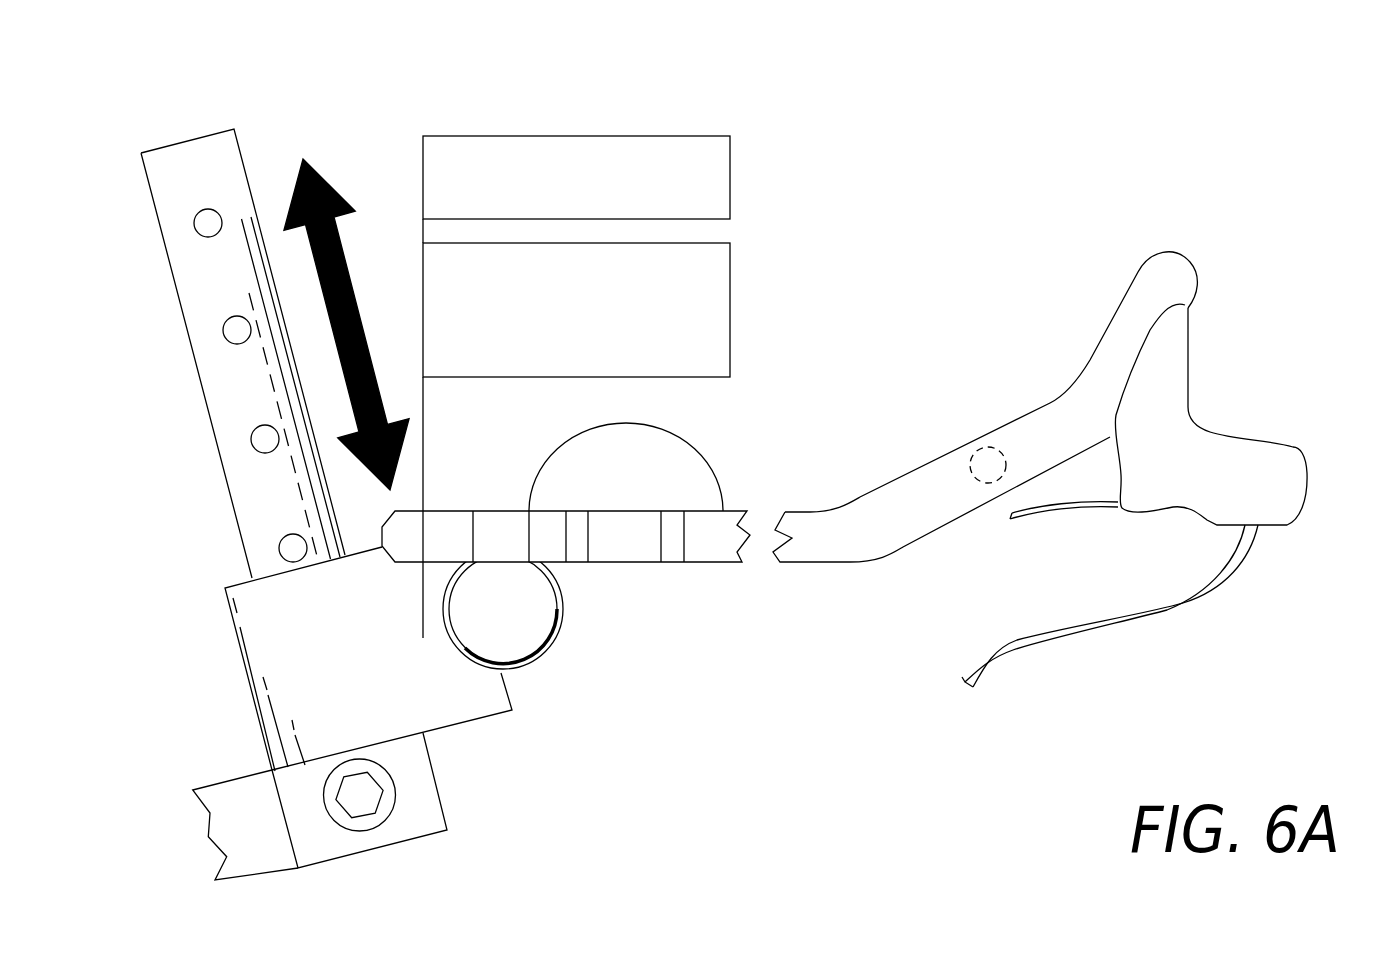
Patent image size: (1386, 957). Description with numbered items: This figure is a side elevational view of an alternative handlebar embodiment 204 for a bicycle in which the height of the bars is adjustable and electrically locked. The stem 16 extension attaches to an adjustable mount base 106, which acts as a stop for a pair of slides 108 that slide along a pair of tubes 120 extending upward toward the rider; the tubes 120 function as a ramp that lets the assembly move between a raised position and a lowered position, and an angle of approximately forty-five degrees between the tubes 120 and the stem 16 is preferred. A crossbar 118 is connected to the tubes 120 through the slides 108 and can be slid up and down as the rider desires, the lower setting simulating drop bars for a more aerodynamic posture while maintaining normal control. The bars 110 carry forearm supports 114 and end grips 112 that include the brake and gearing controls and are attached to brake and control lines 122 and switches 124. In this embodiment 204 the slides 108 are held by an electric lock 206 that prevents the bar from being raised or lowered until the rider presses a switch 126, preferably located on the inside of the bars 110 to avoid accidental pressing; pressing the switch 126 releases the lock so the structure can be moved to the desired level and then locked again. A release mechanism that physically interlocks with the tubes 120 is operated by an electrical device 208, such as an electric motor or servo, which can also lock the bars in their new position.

The stem 16 is at (230, 778).
The adjustable mount base 106 is at (447, 830).
The slides 108 is at (512, 710).
The bars 110 is at (918, 460).
The end grips 112 is at (1188, 380).
The forearm supports 114 is at (698, 452).
The crossbar 118 is at (563, 611).
The tubes 120 is at (215, 128).
The brake and control lines 122 is at (1100, 618).
The switches 124 is at (1067, 510).
The switch 126 is at (990, 447).
The embodiment 204 is at (822, 228).
The electric lock 206 is at (576, 177).
The electrical device 208 is at (576, 310).